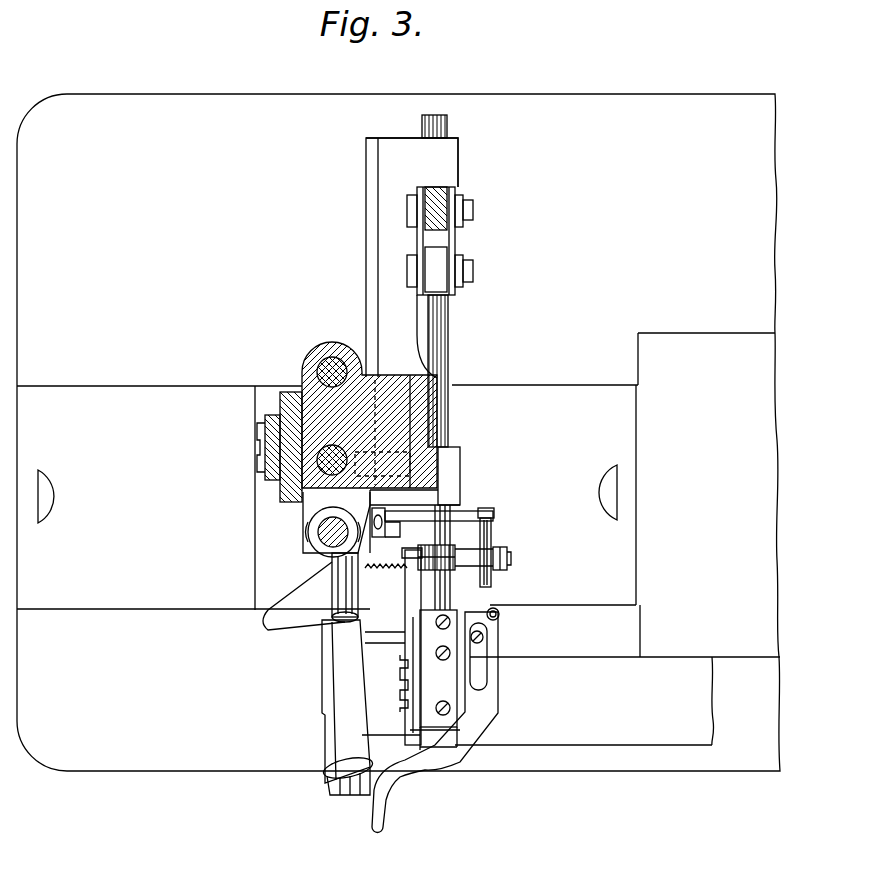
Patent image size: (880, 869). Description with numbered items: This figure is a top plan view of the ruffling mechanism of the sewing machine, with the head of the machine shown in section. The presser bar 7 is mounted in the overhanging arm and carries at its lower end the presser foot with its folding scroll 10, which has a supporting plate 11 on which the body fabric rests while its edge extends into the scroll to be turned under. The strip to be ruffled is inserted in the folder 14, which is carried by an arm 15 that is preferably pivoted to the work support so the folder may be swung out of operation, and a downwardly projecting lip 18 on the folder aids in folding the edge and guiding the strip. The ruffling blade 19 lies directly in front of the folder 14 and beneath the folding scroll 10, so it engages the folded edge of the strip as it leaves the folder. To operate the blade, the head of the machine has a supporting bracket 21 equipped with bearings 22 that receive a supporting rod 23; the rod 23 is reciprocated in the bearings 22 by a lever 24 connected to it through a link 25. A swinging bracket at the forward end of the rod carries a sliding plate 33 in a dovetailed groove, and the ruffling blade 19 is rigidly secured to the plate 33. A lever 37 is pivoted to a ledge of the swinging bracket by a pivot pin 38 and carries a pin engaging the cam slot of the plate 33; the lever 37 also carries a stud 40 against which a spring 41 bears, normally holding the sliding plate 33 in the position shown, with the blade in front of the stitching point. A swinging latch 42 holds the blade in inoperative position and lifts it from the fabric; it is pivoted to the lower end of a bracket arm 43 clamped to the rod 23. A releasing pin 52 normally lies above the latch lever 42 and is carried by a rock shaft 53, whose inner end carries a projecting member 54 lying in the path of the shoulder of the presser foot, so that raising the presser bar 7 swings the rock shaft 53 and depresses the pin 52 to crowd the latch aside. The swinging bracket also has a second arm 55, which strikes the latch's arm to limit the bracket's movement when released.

The presser bar 7 is at (280, 488).
The folding scroll 10 is at (330, 553).
The supporting plate 11 is at (282, 622).
The folder 14 is at (325, 745).
The arm 15 is at (604, 720).
The downwardly projecting lip 18 is at (350, 796).
The ruffling blade 19 is at (405, 600).
The supporting bracket 21 is at (379, 308).
The bearings 22 is at (468, 175).
The supporting rod 23 is at (455, 343).
The lever 24 is at (422, 693).
The link 25 is at (458, 243).
The sliding plate 33 is at (391, 695).
The lever 37 is at (490, 716).
The pivot pin 38 is at (484, 636).
The stud 40 is at (498, 609).
The spring 41 is at (507, 660).
The swinging latch 42 is at (508, 556).
The bracket arm 43 is at (462, 550).
The releasing pin 52 is at (491, 540).
The rock shaft 53 is at (391, 519).
The projecting member 54 is at (387, 379).
The second arm 55 is at (385, 624).